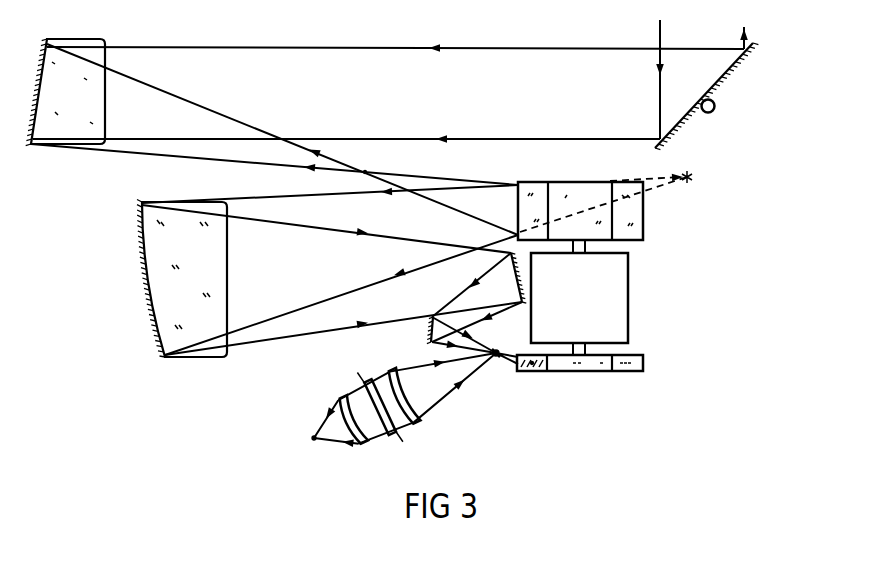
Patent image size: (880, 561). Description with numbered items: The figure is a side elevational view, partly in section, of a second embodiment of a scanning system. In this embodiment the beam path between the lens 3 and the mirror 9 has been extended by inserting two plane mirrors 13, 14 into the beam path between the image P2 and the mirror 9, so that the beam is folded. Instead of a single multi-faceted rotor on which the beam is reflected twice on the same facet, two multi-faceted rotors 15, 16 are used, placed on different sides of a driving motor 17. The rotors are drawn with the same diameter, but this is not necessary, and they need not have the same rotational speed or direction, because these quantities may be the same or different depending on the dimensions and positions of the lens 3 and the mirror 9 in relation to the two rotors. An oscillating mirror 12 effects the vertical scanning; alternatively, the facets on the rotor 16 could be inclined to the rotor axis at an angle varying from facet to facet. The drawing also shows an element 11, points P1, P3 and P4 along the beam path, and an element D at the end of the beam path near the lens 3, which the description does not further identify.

The lens 3 is at (495, 358).
The mirror 9 is at (170, 358).
The plane mirror 11 is at (37, 148).
The oscillating mirror 12 is at (677, 128).
The plane mirror 13 is at (429, 338).
The plane mirror 14 is at (516, 282).
The multi-faceted rotor 15 is at (643, 363).
The multi-faceted rotor 16 is at (643, 214).
The driving motor 17 is at (628, 308).
The image point P1 is at (535, 371).
The image P2 is at (497, 356).
The image point P3 is at (613, 201).
The image point P4 is at (366, 171).
The detector with lens system D is at (314, 440).